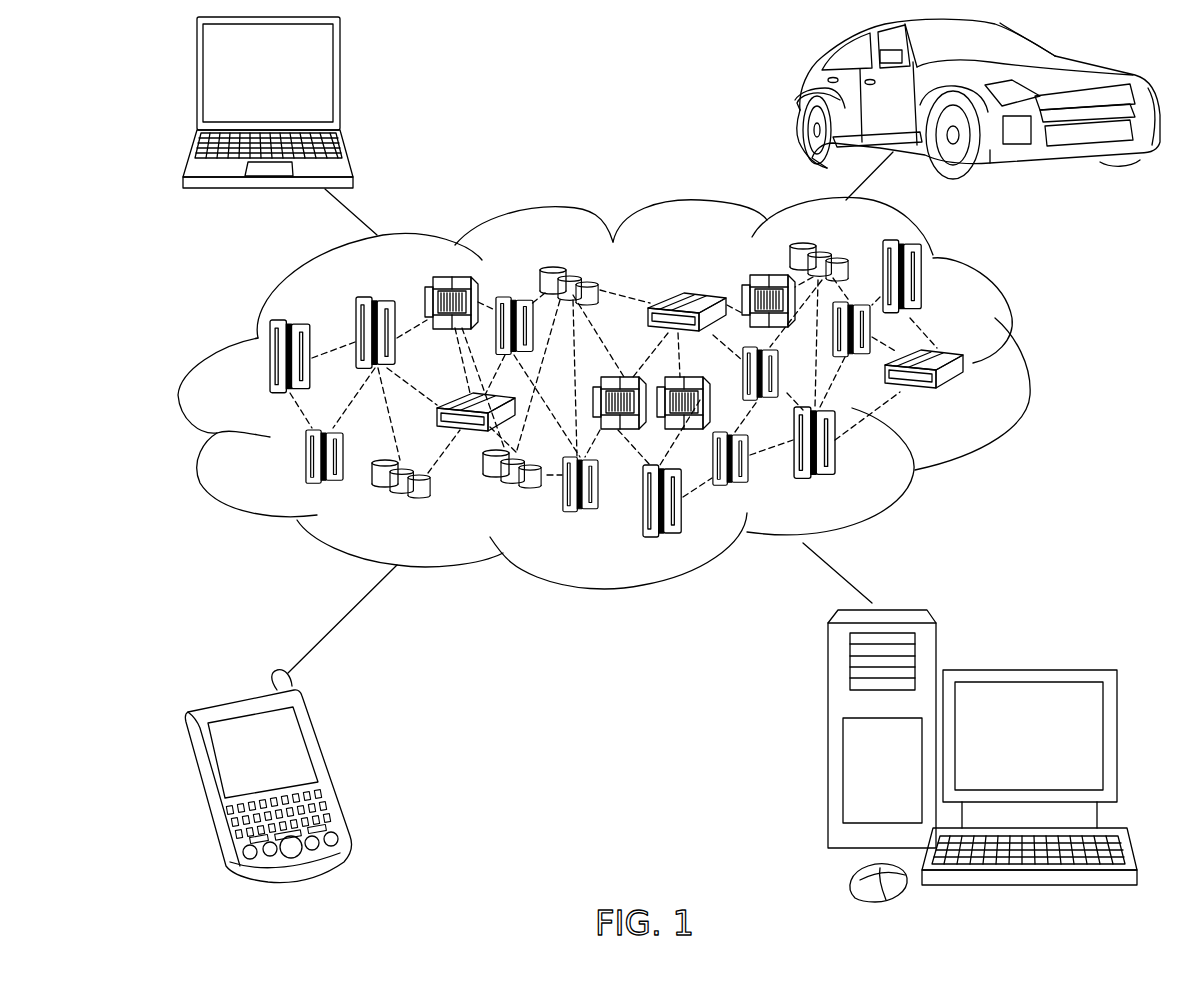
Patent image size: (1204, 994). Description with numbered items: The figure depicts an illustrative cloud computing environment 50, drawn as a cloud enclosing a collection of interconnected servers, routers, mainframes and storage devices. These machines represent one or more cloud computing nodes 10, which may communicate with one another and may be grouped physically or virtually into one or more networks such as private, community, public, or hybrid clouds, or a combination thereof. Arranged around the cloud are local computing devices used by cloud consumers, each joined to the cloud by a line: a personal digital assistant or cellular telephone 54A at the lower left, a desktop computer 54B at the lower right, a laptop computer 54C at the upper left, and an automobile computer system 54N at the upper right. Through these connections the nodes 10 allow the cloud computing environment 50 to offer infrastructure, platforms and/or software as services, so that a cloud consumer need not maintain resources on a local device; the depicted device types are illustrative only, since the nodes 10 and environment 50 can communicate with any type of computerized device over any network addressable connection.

The cloud computing nodes 10 is at (966, 398).
The cloud computing environment 50 is at (1023, 365).
The personal digital assistant or cellular telephone 54A is at (329, 765).
The desktop computer 54B is at (1025, 670).
The laptop computer 54C is at (341, 81).
The automobile computer system 54N is at (797, 97).